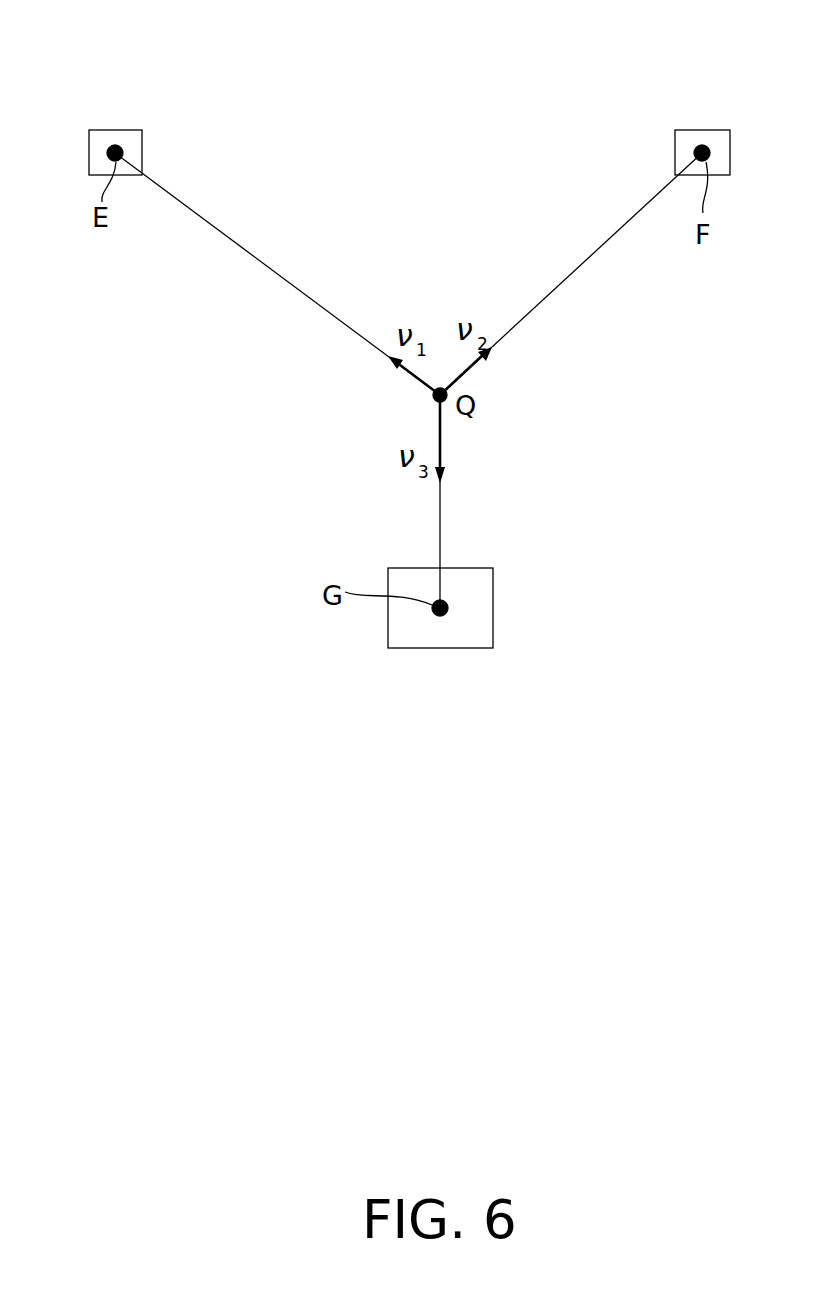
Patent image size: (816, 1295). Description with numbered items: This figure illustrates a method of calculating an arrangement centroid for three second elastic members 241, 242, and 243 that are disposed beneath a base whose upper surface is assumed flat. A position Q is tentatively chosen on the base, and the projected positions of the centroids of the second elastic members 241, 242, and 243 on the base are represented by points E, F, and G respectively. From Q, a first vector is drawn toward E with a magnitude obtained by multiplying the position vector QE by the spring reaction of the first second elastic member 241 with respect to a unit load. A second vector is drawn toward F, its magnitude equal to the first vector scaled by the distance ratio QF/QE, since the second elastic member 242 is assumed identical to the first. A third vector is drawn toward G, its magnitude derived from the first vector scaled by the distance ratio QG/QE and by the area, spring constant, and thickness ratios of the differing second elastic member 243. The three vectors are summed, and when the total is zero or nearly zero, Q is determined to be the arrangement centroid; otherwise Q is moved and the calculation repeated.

The second elastic member 241 is at (115, 130).
The second elastic member 242 is at (702, 130).
The second elastic member 243 is at (493, 607).